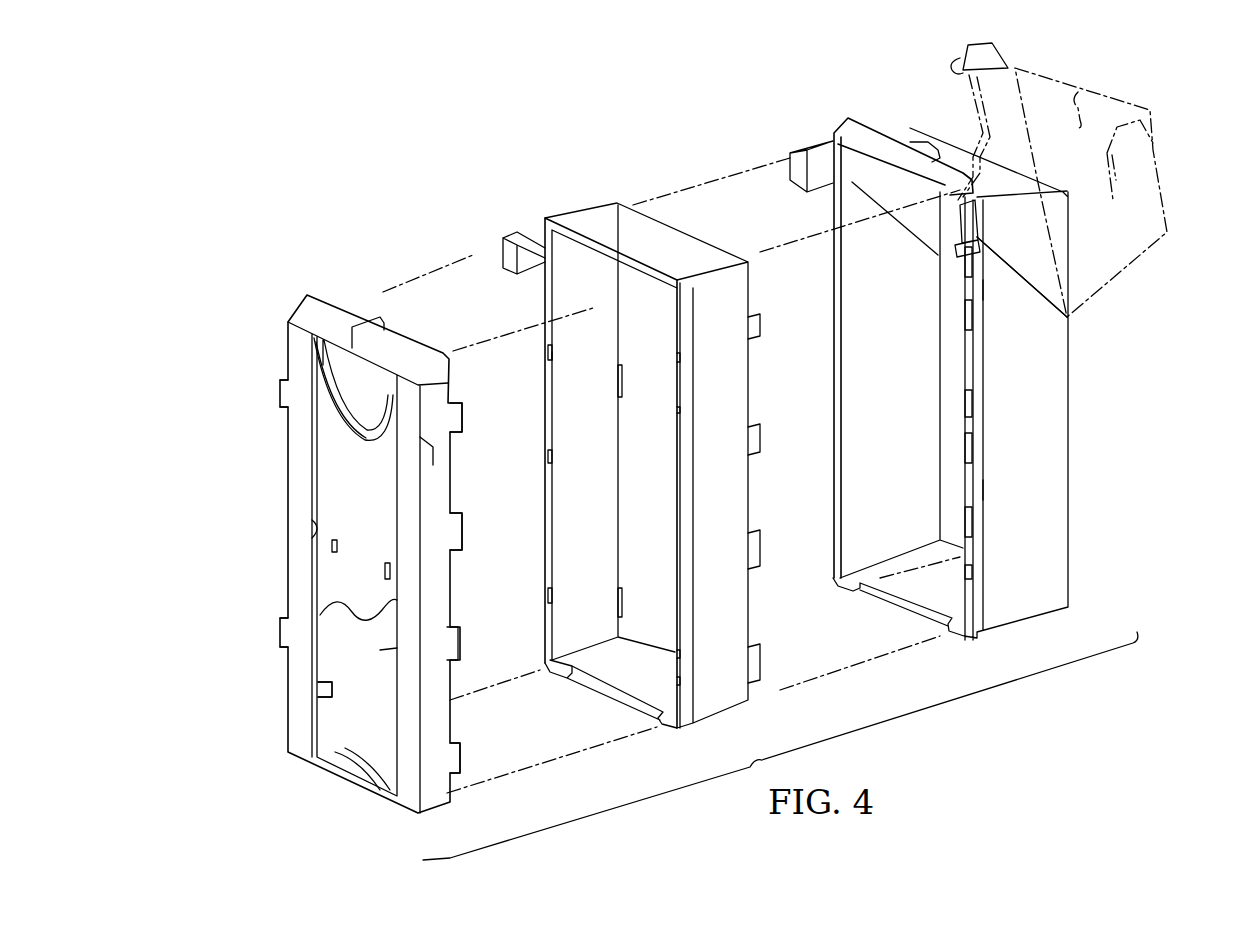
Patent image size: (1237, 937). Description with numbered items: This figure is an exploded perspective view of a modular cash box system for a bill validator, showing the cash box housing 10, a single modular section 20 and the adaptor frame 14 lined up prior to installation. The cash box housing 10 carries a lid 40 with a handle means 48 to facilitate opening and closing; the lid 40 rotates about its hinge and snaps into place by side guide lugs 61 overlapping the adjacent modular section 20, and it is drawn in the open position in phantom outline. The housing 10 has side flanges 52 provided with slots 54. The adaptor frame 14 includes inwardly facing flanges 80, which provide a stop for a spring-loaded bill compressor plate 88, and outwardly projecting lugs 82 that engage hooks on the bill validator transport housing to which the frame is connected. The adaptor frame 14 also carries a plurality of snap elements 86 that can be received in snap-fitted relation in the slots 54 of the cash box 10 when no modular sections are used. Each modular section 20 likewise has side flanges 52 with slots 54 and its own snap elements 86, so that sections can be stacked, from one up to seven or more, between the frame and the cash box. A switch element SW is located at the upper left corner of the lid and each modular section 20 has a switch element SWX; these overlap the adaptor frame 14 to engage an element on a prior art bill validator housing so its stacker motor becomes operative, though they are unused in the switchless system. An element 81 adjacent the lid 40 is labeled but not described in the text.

The cash box housing 10 is at (878, 125).
The adaptor frame 14 is at (285, 314).
The modular section 20 is at (571, 212).
The lid 40 is at (1070, 320).
The handle means 48 is at (938, 136).
The side flanges 52 is at (557, 482).
The slots 54 is at (555, 400).
The side guide lug 61 is at (990, 227).
The inwardly facing flanges 80 is at (312, 538).
The switch tab 81 is at (1130, 151).
The outwardly projecting lugs 82 is at (280, 393).
The snap elements 86 is at (463, 527).
The spring-loaded bill compressor plate 88 is at (368, 497).
The switch element SW is at (977, 46).
The switch element SWX is at (487, 255).